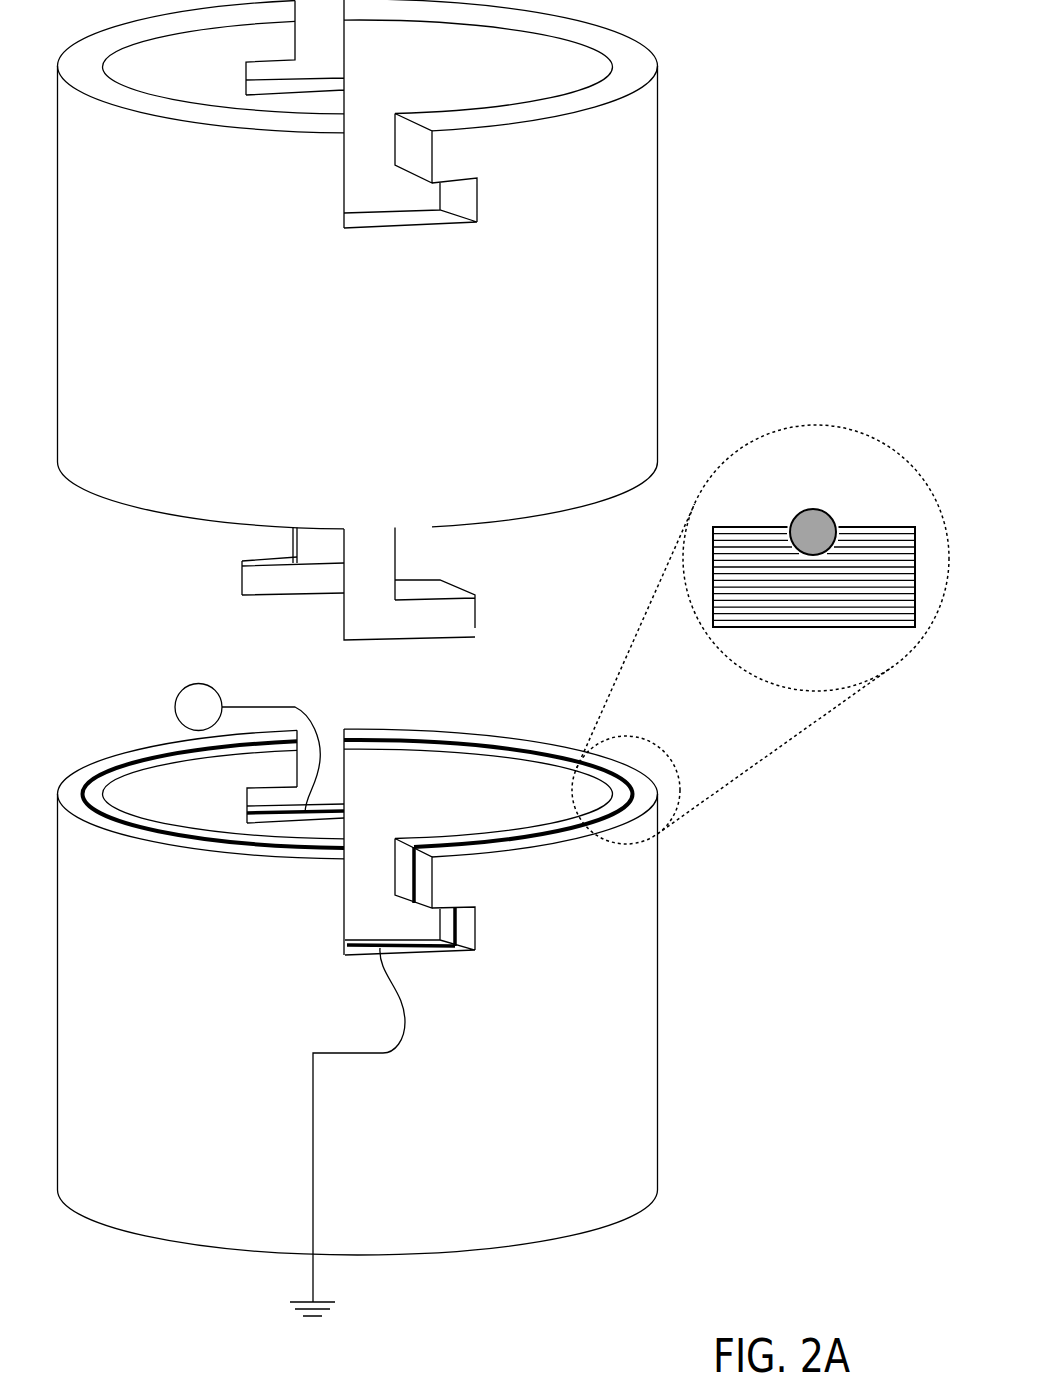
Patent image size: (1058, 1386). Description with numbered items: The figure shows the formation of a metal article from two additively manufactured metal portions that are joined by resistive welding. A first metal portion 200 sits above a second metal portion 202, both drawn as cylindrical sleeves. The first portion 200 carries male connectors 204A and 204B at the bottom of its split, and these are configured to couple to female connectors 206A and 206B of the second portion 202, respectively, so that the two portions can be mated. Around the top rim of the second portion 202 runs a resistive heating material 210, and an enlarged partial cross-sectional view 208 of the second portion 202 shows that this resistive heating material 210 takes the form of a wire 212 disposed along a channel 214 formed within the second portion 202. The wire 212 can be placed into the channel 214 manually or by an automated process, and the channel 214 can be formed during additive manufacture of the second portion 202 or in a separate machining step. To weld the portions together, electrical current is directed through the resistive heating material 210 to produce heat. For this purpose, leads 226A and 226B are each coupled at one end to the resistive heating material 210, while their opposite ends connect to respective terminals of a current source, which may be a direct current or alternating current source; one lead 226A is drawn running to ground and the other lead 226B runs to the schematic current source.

The first metal portion 200 is at (385, 320).
The second metal portion 202 is at (384, 984).
The male connector 204A is at (476, 628).
The male connector 204B is at (240, 584).
The female connector 206A is at (445, 968).
The female connector 206B is at (338, 714).
The partial cross-sectional view 208 is at (760, 602).
The resistive heating material 210 is at (494, 862).
The wire 212 is at (838, 525).
The channel 214 is at (811, 570).
The lead 226A is at (405, 1023).
The lead 226B is at (305, 710).